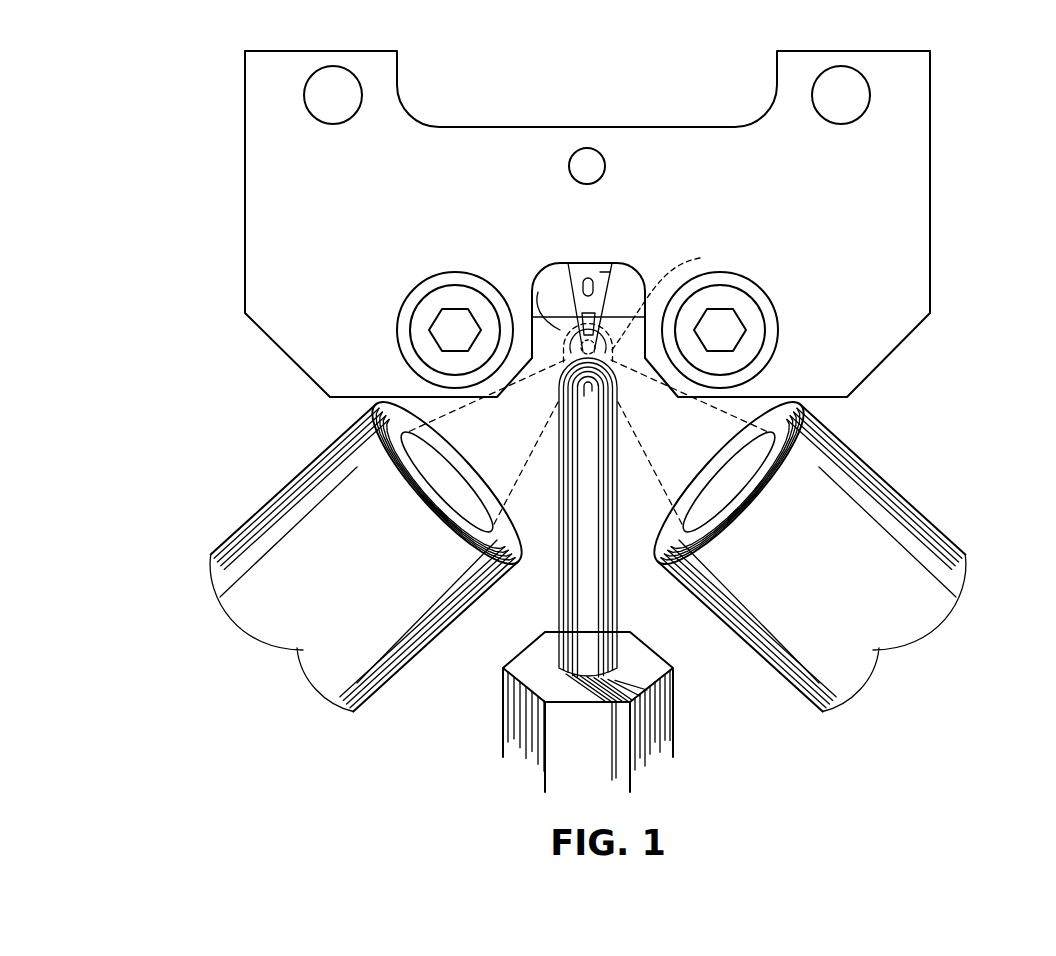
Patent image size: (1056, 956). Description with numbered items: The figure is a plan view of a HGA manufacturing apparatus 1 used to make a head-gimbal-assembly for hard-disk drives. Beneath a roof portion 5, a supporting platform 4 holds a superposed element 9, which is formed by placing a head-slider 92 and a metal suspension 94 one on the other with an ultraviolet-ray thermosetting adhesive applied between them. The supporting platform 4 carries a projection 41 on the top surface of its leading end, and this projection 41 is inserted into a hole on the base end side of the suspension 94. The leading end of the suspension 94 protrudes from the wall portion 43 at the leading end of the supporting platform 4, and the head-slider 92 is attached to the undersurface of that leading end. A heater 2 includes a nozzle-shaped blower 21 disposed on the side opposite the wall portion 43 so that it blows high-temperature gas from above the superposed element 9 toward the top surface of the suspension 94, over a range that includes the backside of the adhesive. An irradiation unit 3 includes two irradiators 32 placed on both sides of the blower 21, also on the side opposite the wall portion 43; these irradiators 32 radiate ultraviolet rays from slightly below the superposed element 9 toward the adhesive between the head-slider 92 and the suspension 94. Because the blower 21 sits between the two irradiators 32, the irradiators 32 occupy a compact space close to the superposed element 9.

The HGA manufacturing apparatus 1 is at (996, 105).
The heater 2 is at (577, 575).
The blower 21 is at (550, 590).
The irradiation unit 3 is at (579, 548).
The irradiators 32 is at (252, 537).
The supporting platform 4 is at (582, 278).
The projection 41 is at (585, 277).
The wall portion 43 is at (536, 284).
The roof portion 5 is at (485, 137).
The superposed element 9 is at (645, 278).
The head-slider 92 is at (668, 298).
The suspension 94 is at (603, 272).